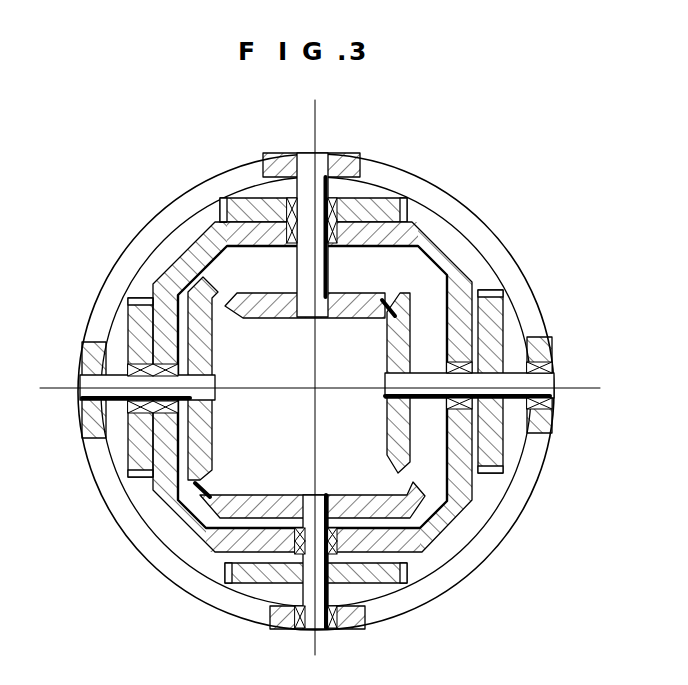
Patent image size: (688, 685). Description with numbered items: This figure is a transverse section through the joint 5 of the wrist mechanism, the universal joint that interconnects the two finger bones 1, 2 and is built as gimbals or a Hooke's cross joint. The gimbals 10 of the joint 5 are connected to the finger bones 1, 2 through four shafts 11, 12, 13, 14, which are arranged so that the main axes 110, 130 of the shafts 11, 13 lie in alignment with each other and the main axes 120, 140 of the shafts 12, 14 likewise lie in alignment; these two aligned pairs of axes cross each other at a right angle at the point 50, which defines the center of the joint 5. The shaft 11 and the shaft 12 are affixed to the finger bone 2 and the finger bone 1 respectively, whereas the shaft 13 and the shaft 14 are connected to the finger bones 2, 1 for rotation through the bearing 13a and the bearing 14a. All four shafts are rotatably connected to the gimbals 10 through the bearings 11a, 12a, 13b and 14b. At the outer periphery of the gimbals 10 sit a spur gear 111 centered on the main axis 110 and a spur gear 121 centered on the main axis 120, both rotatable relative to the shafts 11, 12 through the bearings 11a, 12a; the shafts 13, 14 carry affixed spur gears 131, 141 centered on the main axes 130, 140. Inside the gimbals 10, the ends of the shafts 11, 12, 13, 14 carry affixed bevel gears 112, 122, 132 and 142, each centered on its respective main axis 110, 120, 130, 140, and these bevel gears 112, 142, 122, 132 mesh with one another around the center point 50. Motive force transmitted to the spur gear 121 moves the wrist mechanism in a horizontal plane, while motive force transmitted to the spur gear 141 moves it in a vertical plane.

The finger bone 1 is at (354, 153).
The finger bone 2 is at (95, 425).
The joint 5 is at (472, 261).
The gimbals 10 is at (177, 258).
The shaft 11 is at (118, 445).
The bearing 11a is at (112, 348).
The main axis 110 is at (50, 390).
The spur gear 111 is at (125, 510).
The bevel gear 112 is at (210, 443).
The shaft 12 is at (345, 186).
The bearing 12a is at (328, 243).
The main axis 120 is at (312, 129).
The spur gear 121 is at (408, 212).
The bevel gear 122 is at (270, 318).
The shaft 13 is at (513, 365).
The bearing 13a is at (548, 372).
The bearing 13b is at (445, 360).
The main axis 130 is at (566, 390).
The spur gear 131 is at (498, 457).
The bevel gear 132 is at (387, 418).
The shaft 14 is at (375, 598).
The bearing 14a is at (295, 626).
The bearing 14b is at (349, 546).
The main axis 140 is at (317, 648).
The spur gear 141 is at (237, 598).
The bevel gear 142 is at (260, 503).
The center point 50 is at (313, 391).